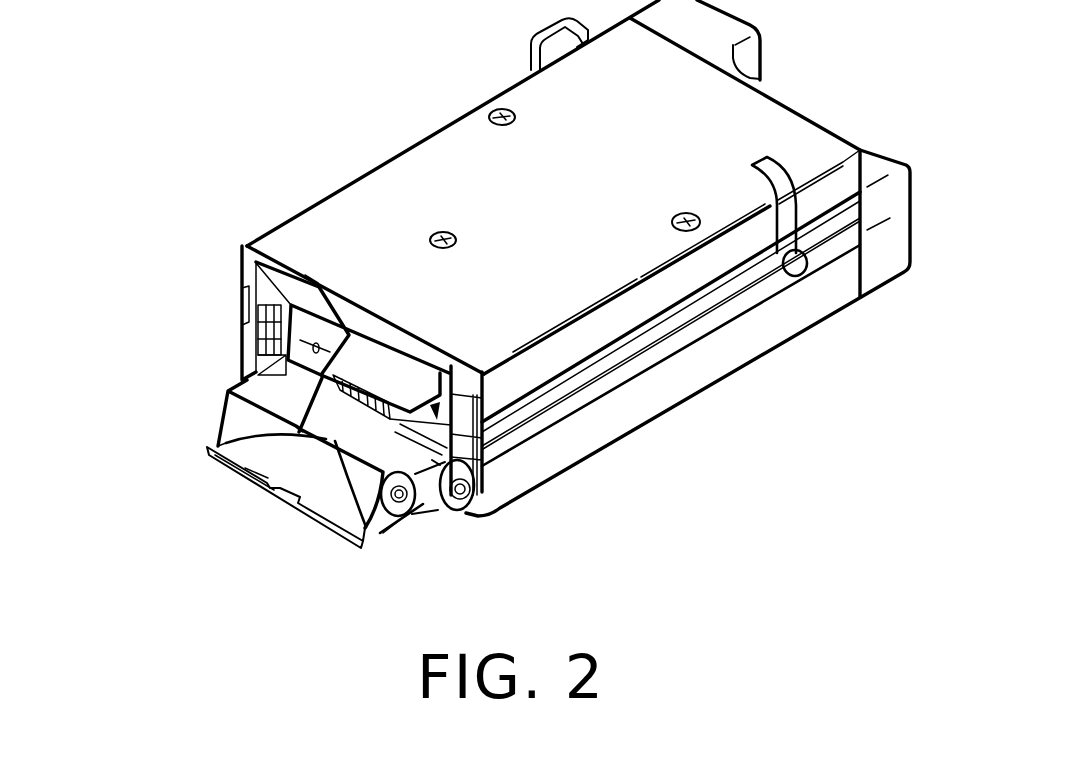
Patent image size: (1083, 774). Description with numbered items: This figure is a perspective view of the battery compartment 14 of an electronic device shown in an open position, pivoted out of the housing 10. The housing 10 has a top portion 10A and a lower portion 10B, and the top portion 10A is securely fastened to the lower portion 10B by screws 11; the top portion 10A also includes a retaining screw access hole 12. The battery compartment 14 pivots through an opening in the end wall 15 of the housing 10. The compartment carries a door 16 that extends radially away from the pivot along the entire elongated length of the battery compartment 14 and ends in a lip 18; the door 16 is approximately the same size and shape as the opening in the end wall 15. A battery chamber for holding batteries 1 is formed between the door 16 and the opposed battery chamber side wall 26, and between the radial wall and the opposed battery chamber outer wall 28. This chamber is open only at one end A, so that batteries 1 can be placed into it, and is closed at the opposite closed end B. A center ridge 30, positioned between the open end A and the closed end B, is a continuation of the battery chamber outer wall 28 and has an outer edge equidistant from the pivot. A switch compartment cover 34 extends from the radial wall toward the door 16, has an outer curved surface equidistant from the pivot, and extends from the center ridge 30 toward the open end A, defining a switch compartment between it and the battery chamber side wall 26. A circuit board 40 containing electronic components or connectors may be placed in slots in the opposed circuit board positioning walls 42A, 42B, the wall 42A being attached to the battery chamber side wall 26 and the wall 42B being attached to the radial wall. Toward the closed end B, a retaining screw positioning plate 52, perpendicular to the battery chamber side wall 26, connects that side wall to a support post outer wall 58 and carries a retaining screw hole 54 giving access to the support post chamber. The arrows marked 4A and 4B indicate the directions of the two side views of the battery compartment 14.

The housing 10 is at (455, 104).
The top portion 10A is at (440, 153).
The lower portion 10B is at (727, 353).
The screws 11 is at (510, 111).
The retaining screw access hole 12 is at (447, 232).
The battery compartment 14 is at (147, 393).
The end wall 15 is at (620, 377).
The door 16 is at (383, 533).
The lip 18 is at (309, 516).
The battery chamber side wall 26 is at (247, 393).
The battery chamber outer wall 28 is at (259, 473).
The center ridge 30 is at (232, 398).
The switch compartment cover 34 is at (393, 360).
The circuit board 40 is at (480, 447).
The circuit board positioning wall 42A is at (380, 440).
The circuit board positioning wall 42B is at (445, 437).
The retaining screw positioning plate 52 is at (323, 335).
The retaining screw hole 54 is at (316, 343).
The support post outer wall 58 is at (314, 290).
The batteries 1 is at (450, 423).
The open end A is at (490, 529).
The closed end B is at (232, 362).
The line 4A is at (758, 620).
The line 4B is at (126, 305).